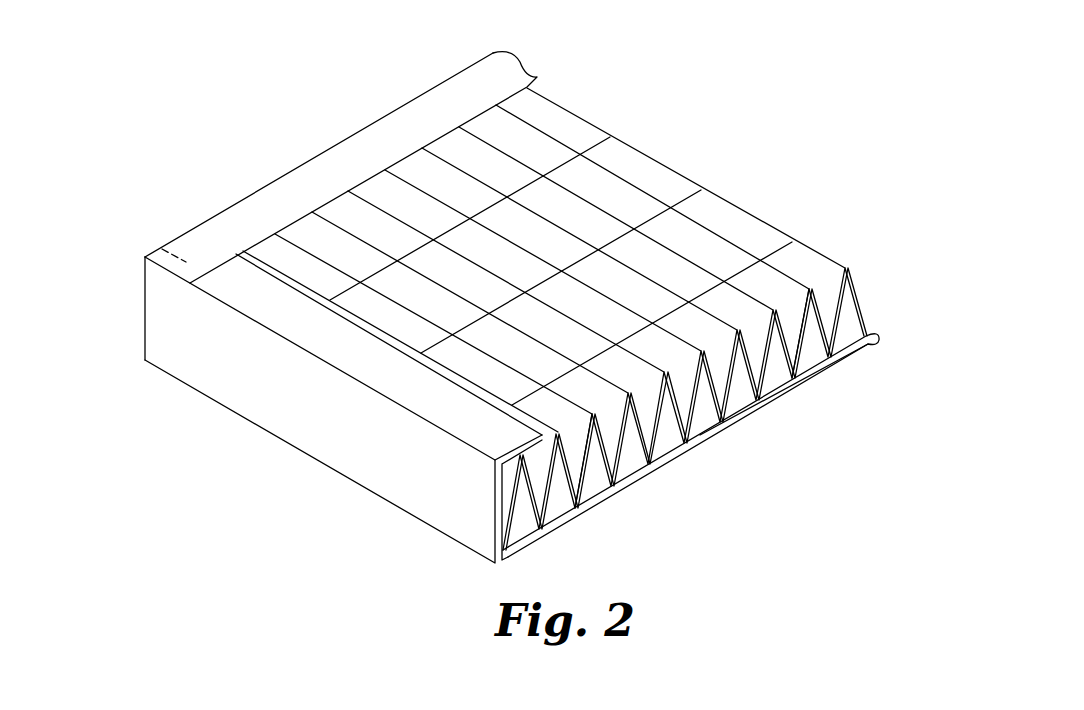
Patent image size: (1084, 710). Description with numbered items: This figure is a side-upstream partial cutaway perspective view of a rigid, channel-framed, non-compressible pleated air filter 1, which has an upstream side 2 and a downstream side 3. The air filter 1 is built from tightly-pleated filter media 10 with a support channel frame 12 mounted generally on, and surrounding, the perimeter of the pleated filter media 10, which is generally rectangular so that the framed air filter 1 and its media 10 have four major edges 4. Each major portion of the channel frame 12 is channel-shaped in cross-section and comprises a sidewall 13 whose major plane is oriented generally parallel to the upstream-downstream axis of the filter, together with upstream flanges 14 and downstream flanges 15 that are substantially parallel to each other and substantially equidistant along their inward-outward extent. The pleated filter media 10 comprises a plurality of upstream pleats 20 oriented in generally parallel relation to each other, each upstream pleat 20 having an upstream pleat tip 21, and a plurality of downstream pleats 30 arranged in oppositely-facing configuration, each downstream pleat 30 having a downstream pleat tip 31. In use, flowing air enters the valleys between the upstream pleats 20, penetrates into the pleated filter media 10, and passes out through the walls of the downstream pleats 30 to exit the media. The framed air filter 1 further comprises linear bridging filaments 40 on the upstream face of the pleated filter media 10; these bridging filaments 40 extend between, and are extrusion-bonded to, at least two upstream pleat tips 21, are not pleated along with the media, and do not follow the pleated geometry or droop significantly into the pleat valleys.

The pleated air filter 1 is at (783, 120).
The upstream side 2 is at (678, 160).
The downstream side 3 is at (701, 393).
The major edges 4 is at (160, 297).
The pleated filter media 10 is at (855, 300).
The channel frame 12 is at (409, 102).
The sidewall 13 is at (235, 395).
The upstream flanges 14 is at (323, 170).
The downstream flanges 15 is at (525, 550).
The upstream pleats 20 is at (807, 332).
The upstream pleat tip 21 is at (809, 290).
The downstream pleats 30 is at (683, 445).
The downstream pleat tip 31 is at (595, 482).
The linear bridging filaments 40 is at (350, 295).